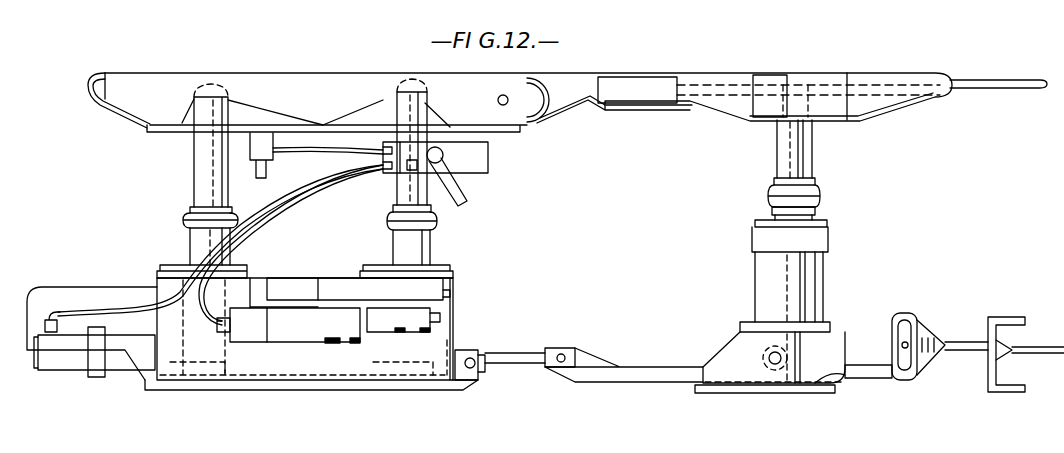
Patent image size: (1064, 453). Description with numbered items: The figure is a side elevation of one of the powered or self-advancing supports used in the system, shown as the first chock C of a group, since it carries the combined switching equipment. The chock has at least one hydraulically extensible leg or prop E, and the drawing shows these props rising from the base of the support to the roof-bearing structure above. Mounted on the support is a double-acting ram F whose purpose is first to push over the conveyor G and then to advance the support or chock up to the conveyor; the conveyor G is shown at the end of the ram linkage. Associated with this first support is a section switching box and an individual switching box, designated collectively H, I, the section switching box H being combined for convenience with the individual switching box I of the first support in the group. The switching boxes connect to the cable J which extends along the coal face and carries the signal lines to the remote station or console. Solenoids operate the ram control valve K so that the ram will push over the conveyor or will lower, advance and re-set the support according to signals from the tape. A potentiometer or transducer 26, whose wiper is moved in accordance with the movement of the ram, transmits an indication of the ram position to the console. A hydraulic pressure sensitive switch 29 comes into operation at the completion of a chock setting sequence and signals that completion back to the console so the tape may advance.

The hydraulically extensible leg E is at (197, 160).
The first chock C is at (182, 226).
The hydraulic pressure sensitive switch 29 is at (266, 162).
The section switching box H is at (488, 158).
The individual switching box I is at (412, 165).
The cable J is at (462, 197).
The potentiometer 26 is at (67, 352).
The ram control valve K is at (246, 322).
The double-acting ram F is at (480, 355).
The conveyor G is at (1005, 330).